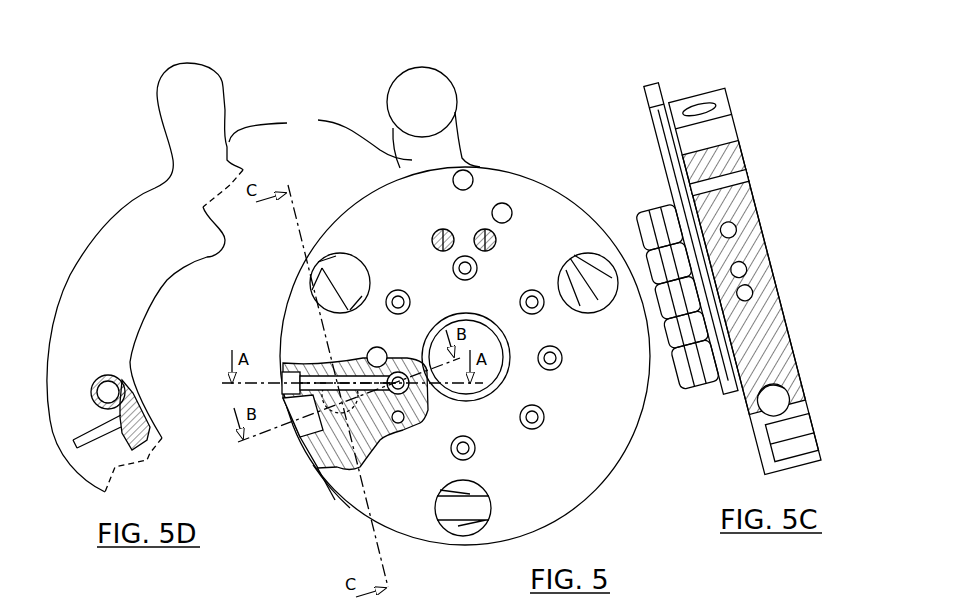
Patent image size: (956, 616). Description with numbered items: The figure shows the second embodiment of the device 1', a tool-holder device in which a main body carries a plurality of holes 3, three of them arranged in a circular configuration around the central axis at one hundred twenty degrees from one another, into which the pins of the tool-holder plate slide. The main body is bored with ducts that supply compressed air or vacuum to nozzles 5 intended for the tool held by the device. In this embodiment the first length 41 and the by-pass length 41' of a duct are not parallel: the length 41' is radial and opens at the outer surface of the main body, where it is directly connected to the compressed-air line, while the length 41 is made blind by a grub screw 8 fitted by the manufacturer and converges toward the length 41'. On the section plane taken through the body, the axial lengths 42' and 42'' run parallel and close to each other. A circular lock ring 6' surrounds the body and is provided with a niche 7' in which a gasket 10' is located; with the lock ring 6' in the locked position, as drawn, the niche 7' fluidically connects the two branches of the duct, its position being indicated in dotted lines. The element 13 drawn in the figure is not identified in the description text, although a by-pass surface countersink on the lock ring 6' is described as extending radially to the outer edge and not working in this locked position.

In FIG. 5, the device 1' is at (450, 276).
In FIG. 5, the holes 3 is at (582, 254).
In FIG. 5C, the nozzles 5 is at (684, 388).
In FIG. 5, the lock ring 6' is at (320, 133).
In FIG. 5D, the lock ring 6' is at (182, 277).
In FIG. 5, the niche 7' is at (629, 192).
In FIG. 5C, the niche 7' is at (664, 280).
In FIG. 5D, the niche 7' is at (139, 412).
In FIG. 5, the grub screw 8 is at (281, 372).
In FIG. 5, the gasket 10' is at (323, 508).
In FIG. 5D, the gasket 10' is at (167, 339).
In FIG. 5, the spring pin 13 is at (313, 465).
In FIG. 5D, the spring pin 13 is at (66, 442).
In FIG. 5, the length 41 is at (337, 353).
In FIG. 5C, the length 41 is at (761, 237).
In FIG. 5C, the length 41' is at (794, 320).
In FIG. 5C, the axial length 42' is at (745, 281).
In FIG. 5C, the axial length 42'' is at (737, 430).